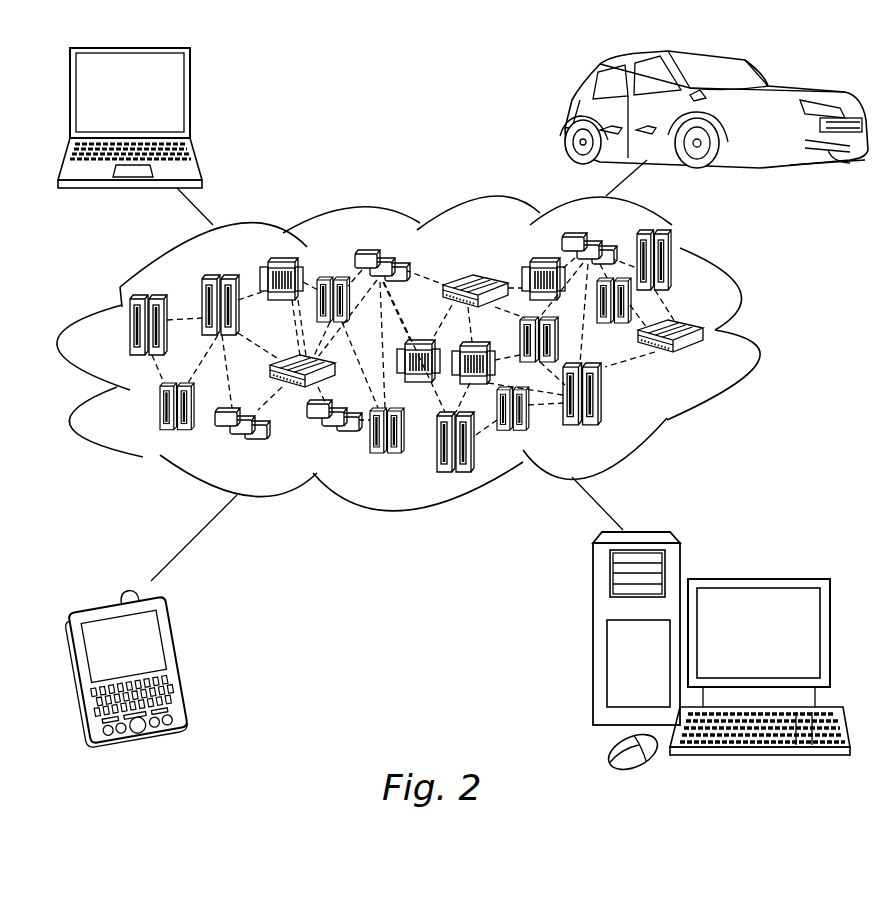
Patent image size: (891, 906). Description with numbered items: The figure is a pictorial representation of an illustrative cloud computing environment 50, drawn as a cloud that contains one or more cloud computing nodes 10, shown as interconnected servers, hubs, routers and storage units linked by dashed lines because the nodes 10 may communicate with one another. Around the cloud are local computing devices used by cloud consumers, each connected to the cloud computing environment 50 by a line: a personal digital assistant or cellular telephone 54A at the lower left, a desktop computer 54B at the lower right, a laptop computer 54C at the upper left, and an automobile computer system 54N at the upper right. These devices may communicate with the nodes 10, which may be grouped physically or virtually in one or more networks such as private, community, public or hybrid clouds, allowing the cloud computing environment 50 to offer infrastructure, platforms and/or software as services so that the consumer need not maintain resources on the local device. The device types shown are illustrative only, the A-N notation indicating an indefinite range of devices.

The cloud computing node 10 is at (709, 360).
The cloud computing environment 50 is at (432, 353).
The personal digital assistant or cellular telephone 54A is at (186, 662).
The desktop computer 54B is at (758, 579).
The laptop computer 54C is at (188, 100).
The automobile computer system 54N is at (570, 112).